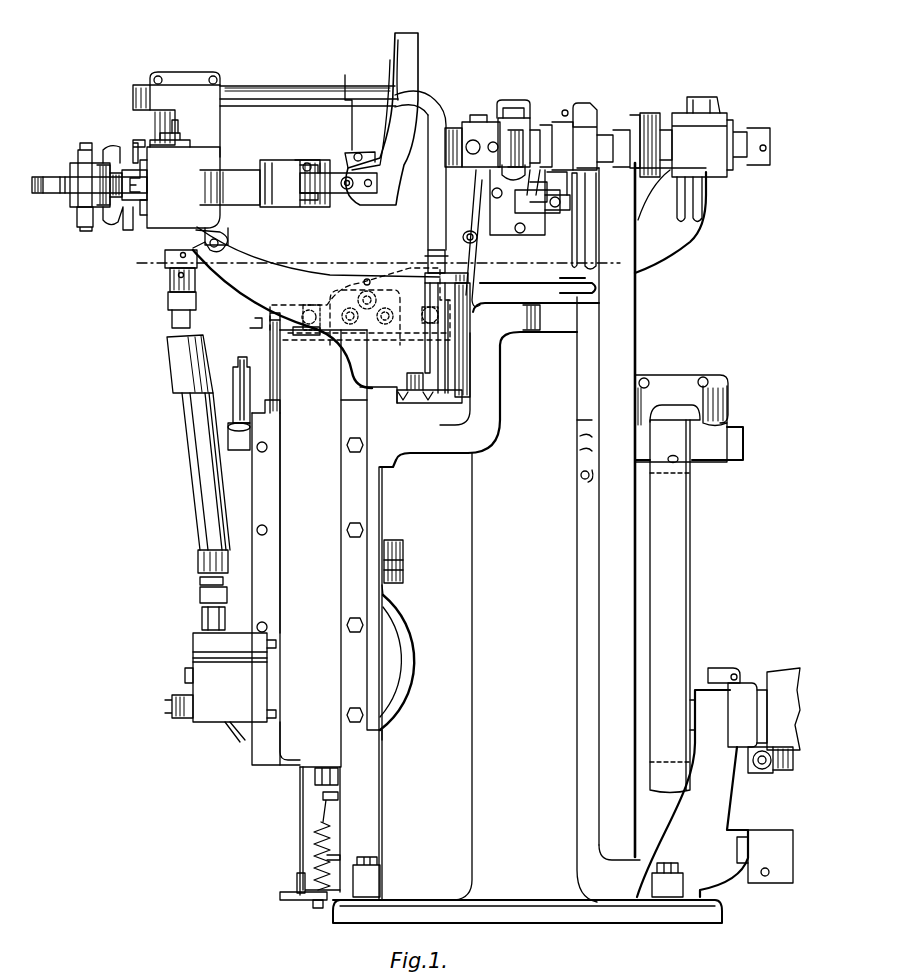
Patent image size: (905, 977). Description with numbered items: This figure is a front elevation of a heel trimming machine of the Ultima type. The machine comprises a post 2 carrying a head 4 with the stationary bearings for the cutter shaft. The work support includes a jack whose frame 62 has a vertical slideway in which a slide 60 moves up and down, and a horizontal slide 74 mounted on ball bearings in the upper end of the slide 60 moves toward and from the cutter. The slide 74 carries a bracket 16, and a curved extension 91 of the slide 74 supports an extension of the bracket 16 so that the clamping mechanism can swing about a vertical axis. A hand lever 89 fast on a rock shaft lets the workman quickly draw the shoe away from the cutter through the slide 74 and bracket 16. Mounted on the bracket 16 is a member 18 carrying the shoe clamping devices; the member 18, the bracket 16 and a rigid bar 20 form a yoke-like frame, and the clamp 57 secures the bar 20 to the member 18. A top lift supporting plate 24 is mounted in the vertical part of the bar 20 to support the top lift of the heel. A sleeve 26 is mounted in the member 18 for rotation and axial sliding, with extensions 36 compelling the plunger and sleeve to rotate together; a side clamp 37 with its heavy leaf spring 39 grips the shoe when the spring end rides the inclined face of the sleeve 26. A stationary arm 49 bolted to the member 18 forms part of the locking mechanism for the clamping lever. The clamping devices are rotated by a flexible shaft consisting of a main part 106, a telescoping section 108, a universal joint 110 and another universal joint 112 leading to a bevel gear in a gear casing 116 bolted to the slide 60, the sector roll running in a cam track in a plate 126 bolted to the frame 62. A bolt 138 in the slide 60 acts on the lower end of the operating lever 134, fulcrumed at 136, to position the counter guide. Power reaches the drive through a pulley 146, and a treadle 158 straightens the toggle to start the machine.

The post 2 is at (560, 572).
The head 4 is at (480, 262).
The bracket 16 is at (255, 328).
The member 18 is at (137, 147).
The rigid bar 20 is at (250, 98).
The top lift supporting plate 24 is at (428, 175).
The sleeve 26 is at (245, 178).
The extensions 36 is at (305, 185).
The side clamp 37 is at (372, 160).
The leaf spring 39 is at (298, 170).
The stationary arm 49 is at (45, 187).
The clamp 57 is at (165, 78).
The slide 60 is at (290, 760).
The frame 62 is at (420, 443).
The slide 74 is at (180, 306).
The hand lever 89 is at (238, 398).
The extension 91 is at (462, 395).
The main part of flexible shaft 106 is at (200, 488).
The telescoping section 108 is at (245, 328).
The universal joint 110 is at (170, 283).
The universal joint 112 is at (212, 592).
The gear casing 116 is at (200, 686).
The plate 126 is at (212, 622).
The operating lever 134 is at (505, 165).
The fulcrum 136 is at (478, 237).
The bolt 138 is at (475, 340).
The pulley 146 is at (405, 690).
The treadle 158 is at (285, 895).